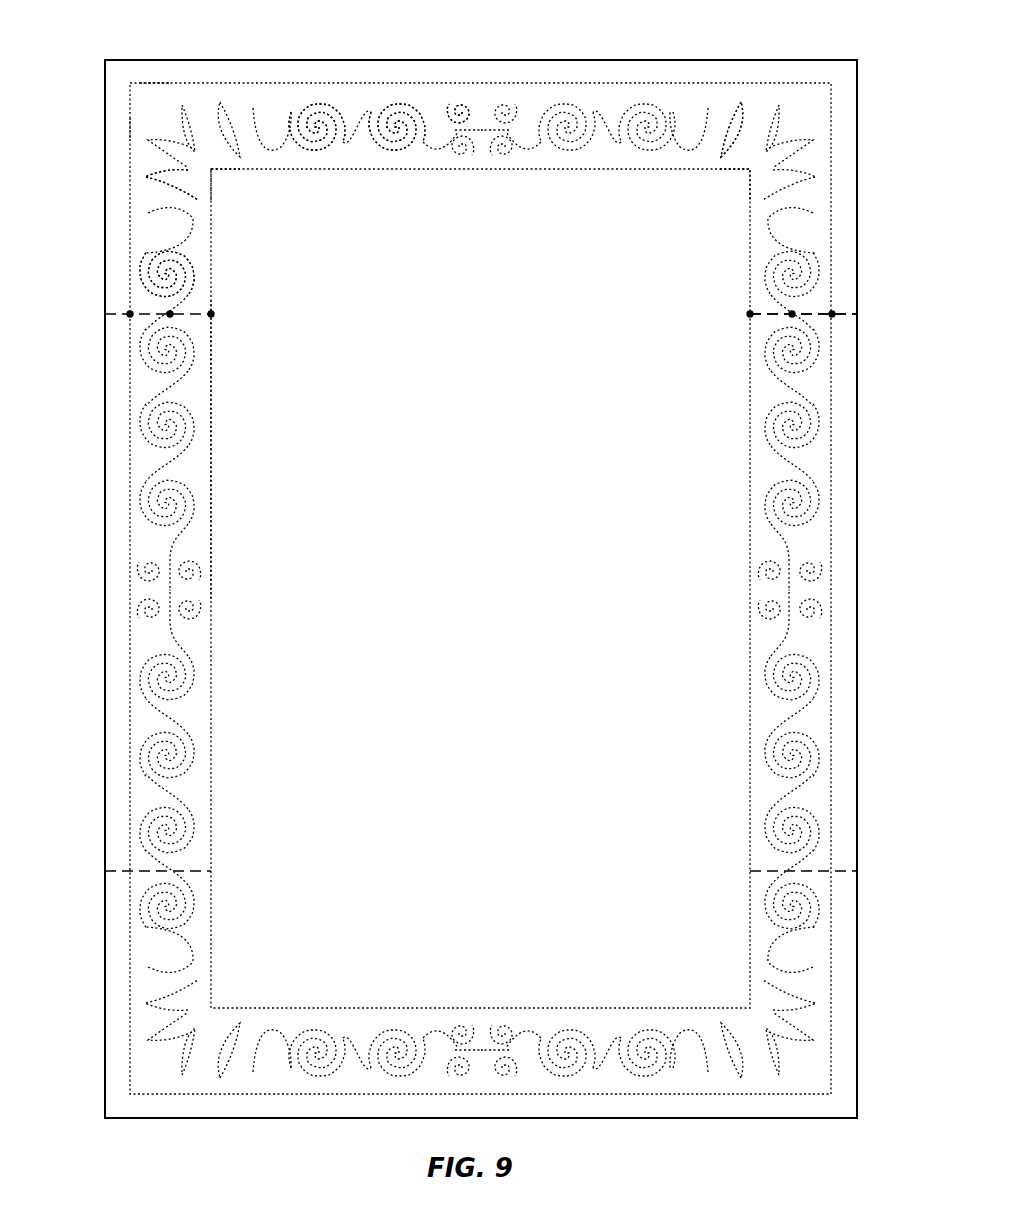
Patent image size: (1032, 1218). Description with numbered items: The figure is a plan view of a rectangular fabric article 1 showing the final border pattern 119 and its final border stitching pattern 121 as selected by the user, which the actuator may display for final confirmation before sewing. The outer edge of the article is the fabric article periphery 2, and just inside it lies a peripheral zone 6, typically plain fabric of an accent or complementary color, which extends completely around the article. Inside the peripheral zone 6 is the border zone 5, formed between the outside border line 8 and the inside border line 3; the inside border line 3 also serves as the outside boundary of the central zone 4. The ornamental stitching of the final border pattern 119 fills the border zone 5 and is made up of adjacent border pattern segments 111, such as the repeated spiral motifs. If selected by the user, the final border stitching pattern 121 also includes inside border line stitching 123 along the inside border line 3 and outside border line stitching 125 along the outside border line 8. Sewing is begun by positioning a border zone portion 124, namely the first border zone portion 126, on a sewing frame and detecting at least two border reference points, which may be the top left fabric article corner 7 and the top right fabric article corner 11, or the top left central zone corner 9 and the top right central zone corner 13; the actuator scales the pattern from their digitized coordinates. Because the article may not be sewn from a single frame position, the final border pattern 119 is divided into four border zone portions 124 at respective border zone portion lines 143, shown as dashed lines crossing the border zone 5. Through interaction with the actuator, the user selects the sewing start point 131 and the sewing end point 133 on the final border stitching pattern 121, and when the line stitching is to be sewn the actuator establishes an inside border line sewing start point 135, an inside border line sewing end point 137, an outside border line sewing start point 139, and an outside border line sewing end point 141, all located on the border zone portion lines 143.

The fabric article 1 is at (857, 531).
The fabric article periphery 2 is at (857, 636).
The inside border line 3 is at (212, 455).
The central zone 4 is at (692, 341).
The border zone 5 is at (768, 100).
The peripheral zone 6 is at (628, 72).
The top left fabric article corner 7 is at (105, 60).
The outside border line 8 is at (155, 83).
The top left central zone corner 9 is at (212, 172).
The top right fabric article corner 11 is at (857, 60).
The top right central zone corner 13 is at (749, 171).
The border pattern segment 111 is at (200, 258).
The final border pattern 119 is at (287, 110).
The final border stitching pattern 121 is at (368, 107).
The inside border line stitching 123 is at (410, 170).
The border zone portion 124 is at (832, 148).
The outside border line stitching 125 is at (500, 82).
The first border zone portion 126 is at (128, 128).
The sewing start point 131 is at (172, 315).
The sewing end point 133 is at (793, 316).
The inside border line sewing start point 135 is at (212, 314).
The inside border line sewing end point 137 is at (750, 316).
The outside border line sewing start point 139 is at (128, 314).
The outside border line sewing end point 141 is at (832, 316).
The border zone portion line 143 is at (148, 315).